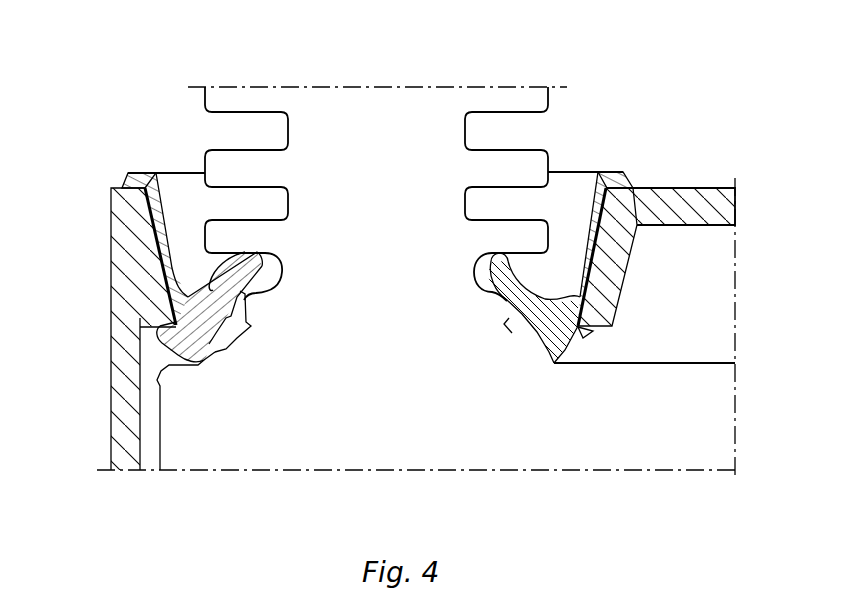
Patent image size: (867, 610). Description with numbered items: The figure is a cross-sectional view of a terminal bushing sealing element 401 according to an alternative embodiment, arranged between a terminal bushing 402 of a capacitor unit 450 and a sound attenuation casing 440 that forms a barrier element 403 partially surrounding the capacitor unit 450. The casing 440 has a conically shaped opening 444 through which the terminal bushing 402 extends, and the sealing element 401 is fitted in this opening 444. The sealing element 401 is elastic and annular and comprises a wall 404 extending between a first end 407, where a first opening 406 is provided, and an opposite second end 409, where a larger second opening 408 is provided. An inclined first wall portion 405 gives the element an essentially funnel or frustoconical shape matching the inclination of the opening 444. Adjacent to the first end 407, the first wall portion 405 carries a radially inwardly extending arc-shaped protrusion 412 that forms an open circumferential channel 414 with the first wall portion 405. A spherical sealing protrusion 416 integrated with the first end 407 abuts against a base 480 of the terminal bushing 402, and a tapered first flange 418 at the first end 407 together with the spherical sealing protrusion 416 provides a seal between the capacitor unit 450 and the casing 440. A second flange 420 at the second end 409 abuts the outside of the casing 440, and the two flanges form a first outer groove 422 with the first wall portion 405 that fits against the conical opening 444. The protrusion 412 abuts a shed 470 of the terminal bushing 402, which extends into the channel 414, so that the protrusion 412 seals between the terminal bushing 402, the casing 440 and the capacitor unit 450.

The terminal bushing sealing element 401 is at (613, 172).
The terminal bushing 402 is at (442, 102).
The barrier element 403 is at (723, 203).
The wall 404 is at (163, 228).
The first wall portion 405 is at (147, 243).
The first opening 406 is at (327, 372).
The first end 407 is at (553, 364).
The second opening 408 is at (362, 182).
The second end 409 is at (155, 173).
The protrusion 412 is at (248, 288).
The channel 414 is at (238, 250).
The spherical sealing protrusion 416 is at (210, 348).
The first flange 418 is at (590, 333).
The second flange 420 is at (123, 180).
The first outer groove 422 is at (602, 255).
The sound attenuation casing 440 is at (670, 195).
The opening 444 is at (165, 305).
The capacitor unit 450 is at (442, 438).
The shed 470 is at (498, 260).
The base 480 is at (548, 354).